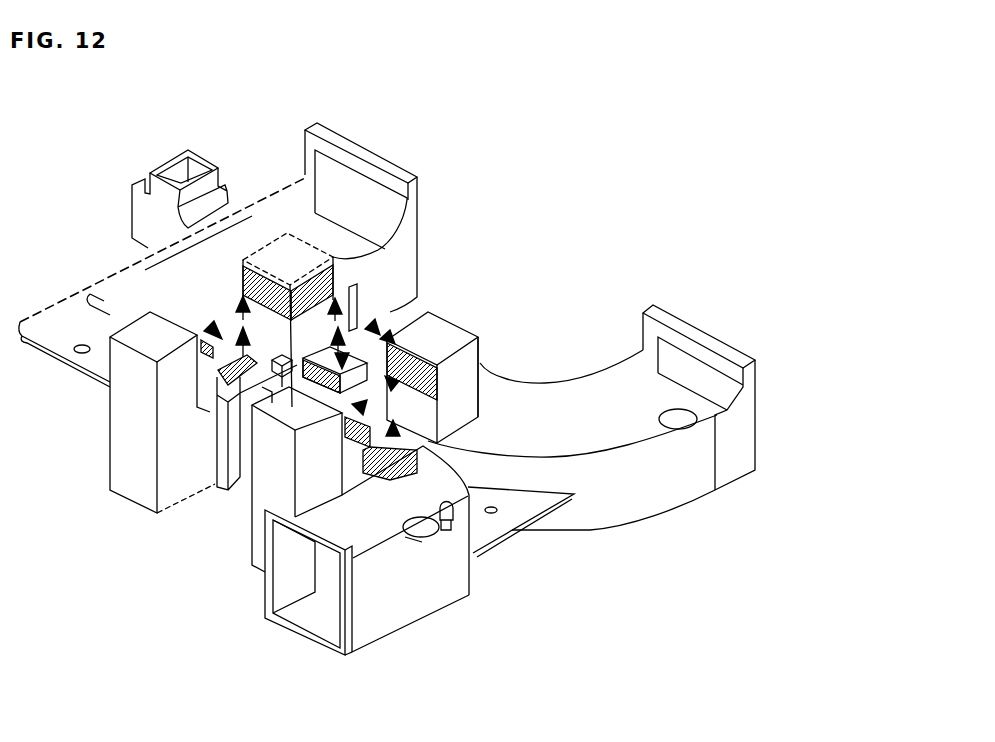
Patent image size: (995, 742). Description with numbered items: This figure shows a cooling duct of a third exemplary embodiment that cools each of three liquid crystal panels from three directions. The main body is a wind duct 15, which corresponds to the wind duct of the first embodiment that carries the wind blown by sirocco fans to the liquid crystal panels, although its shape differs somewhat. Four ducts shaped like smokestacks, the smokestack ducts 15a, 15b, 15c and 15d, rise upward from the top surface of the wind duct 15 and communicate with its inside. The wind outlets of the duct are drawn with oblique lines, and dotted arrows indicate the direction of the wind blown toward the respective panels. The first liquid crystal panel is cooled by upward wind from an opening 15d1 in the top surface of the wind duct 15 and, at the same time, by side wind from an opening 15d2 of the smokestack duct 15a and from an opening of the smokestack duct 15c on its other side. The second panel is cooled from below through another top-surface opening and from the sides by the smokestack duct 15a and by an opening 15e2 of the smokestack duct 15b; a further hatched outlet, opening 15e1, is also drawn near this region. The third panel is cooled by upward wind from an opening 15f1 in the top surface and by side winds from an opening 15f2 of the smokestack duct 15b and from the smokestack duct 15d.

The wind duct 15 is at (580, 516).
The smokestack duct 15a is at (433, 340).
The smokestack duct 15b is at (305, 258).
The smokestack duct 15c is at (273, 468).
The smokestack duct 15d is at (137, 440).
The opening 15d1 is at (354, 448).
The opening 15d2 is at (480, 363).
The opening 15e1 is at (347, 360).
The opening 15e2 is at (298, 290).
The opening 15f1 is at (212, 410).
The opening 15f2 is at (258, 290).